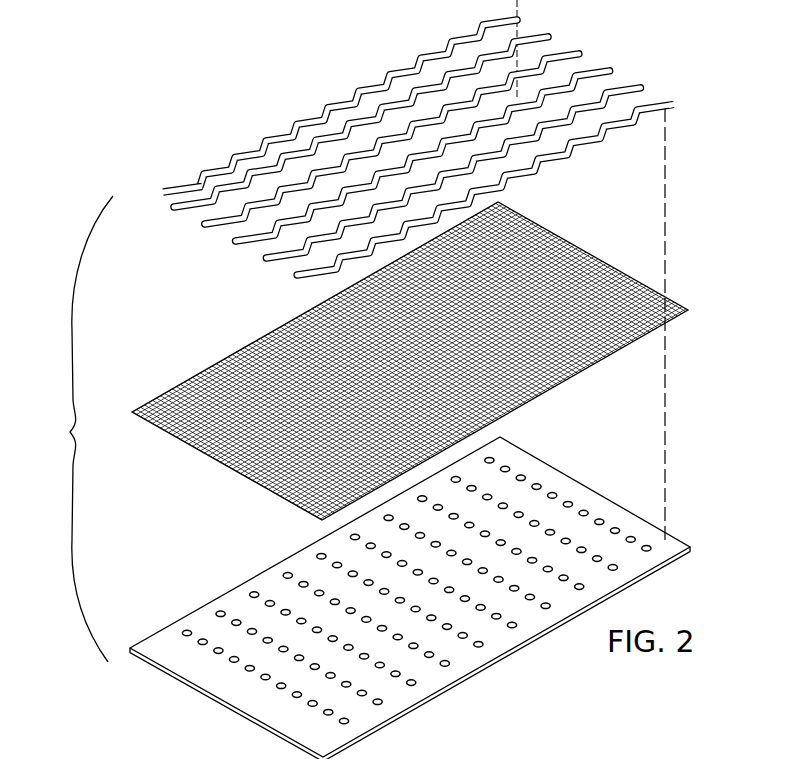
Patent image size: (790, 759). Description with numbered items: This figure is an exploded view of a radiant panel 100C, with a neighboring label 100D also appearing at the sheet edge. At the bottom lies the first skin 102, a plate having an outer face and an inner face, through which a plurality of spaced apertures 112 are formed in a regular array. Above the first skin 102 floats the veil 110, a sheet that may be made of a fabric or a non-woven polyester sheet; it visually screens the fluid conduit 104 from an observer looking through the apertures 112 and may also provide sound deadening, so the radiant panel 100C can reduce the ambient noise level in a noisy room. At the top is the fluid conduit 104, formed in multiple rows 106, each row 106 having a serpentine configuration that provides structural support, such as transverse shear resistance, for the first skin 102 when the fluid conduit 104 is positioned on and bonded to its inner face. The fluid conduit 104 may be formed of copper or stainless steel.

The radiant panel 100C is at (74, 429).
The coil assembly 100D is at (730, 750).
The first skin 102 is at (594, 490).
The fluid conduit 104 is at (163, 193).
The rows 106 is at (236, 186).
The veil 110 is at (533, 222).
The spaced apertures 112 is at (285, 610).